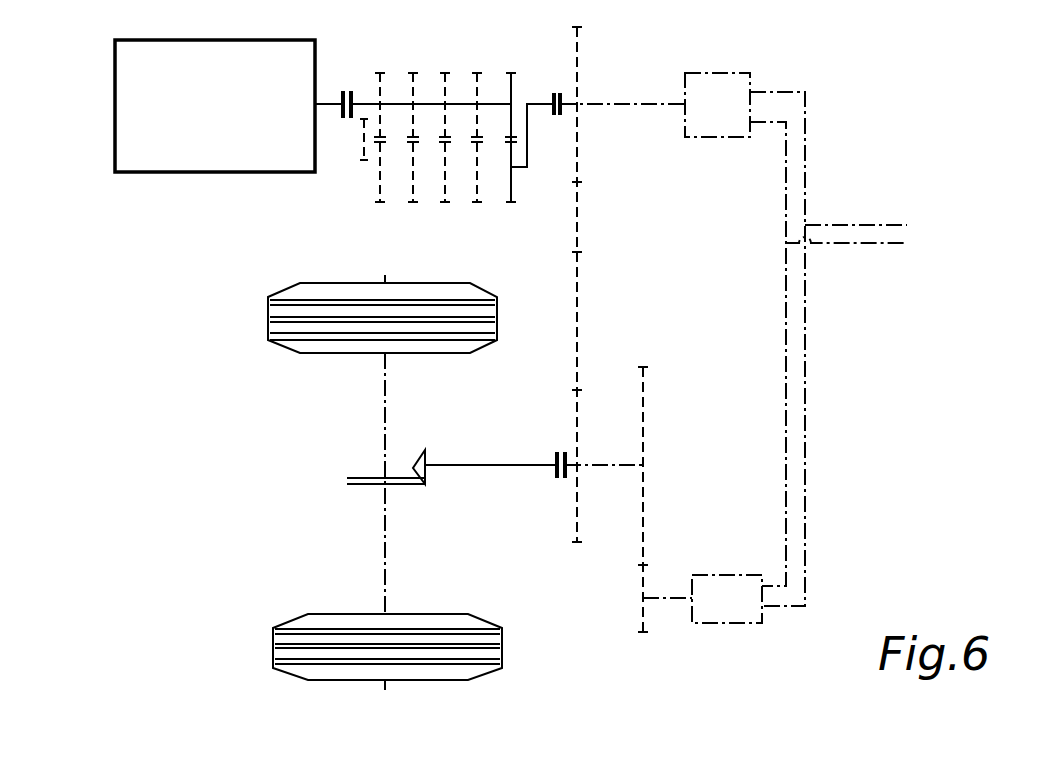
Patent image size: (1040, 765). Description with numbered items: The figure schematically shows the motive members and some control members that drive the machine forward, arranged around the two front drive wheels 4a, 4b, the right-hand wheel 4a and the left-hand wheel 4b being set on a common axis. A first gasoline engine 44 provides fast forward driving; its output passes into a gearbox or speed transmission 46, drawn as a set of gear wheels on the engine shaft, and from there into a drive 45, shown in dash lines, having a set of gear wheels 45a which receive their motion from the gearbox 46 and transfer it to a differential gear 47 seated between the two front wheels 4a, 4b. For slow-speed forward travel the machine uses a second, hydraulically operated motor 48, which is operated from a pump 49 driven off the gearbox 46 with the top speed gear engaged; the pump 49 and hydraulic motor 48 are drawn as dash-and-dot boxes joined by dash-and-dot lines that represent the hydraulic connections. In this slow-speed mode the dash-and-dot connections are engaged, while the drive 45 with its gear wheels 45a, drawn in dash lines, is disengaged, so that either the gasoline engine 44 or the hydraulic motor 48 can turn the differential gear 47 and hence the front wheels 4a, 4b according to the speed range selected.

The first gasoline engine 44 is at (218, 172).
The gearbox 46 is at (360, 203).
The drive 45 is at (585, 331).
The gear wheels 45a is at (578, 95).
The pump 49 is at (728, 140).
The hydraulically operated motor 48 is at (728, 575).
The differential gear 47 is at (345, 480).
The left front wheel 4b is at (293, 352).
The right front wheel 4a is at (290, 618).